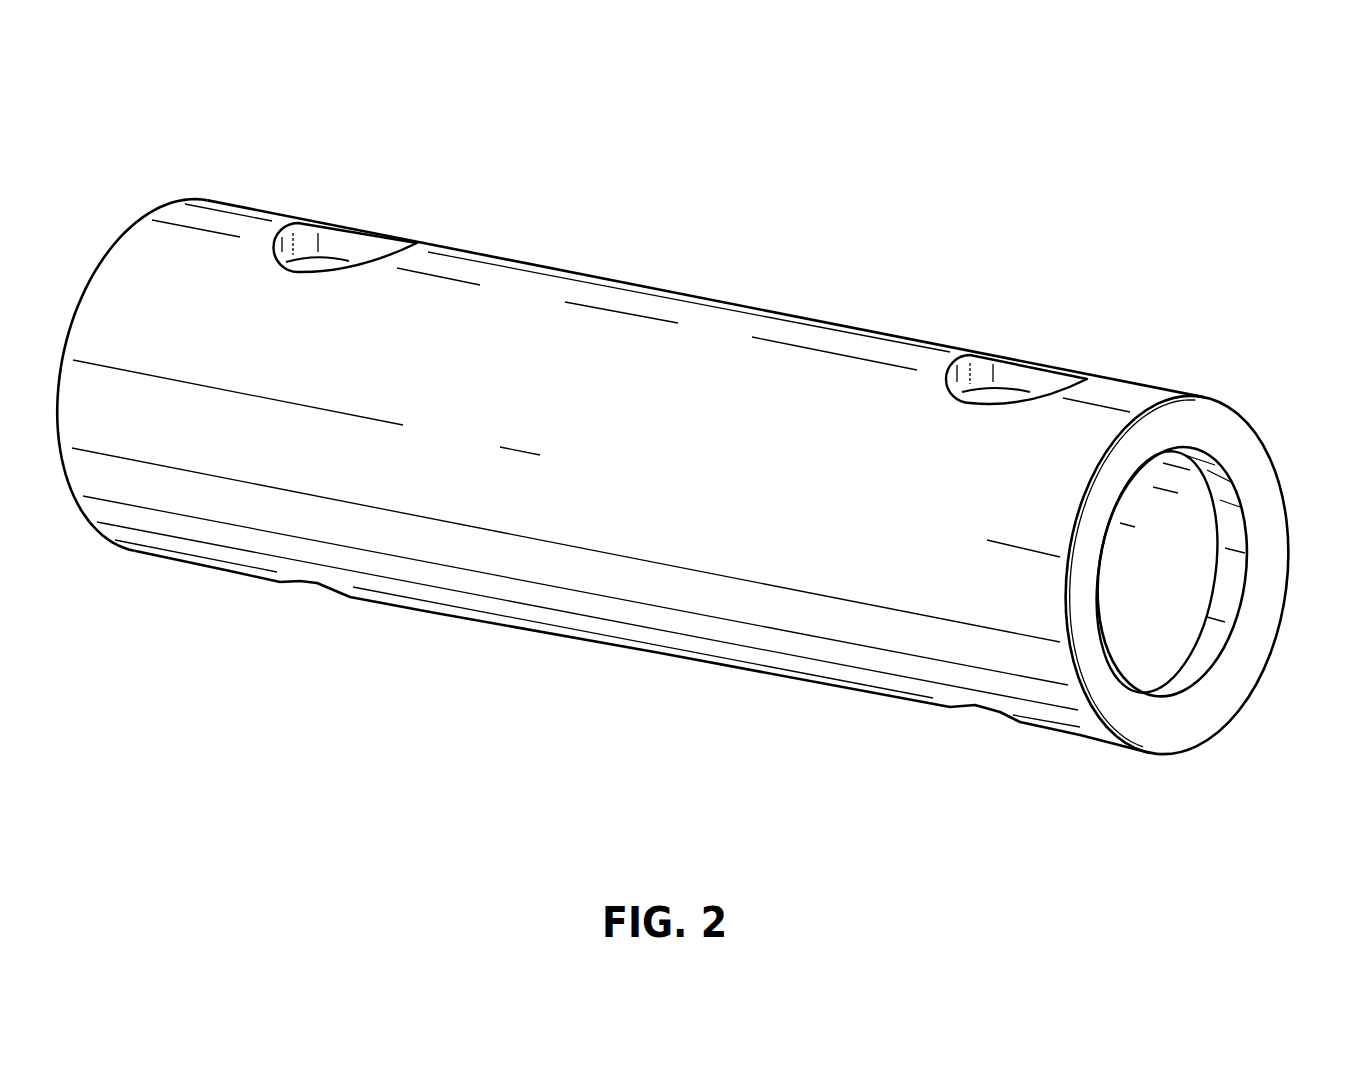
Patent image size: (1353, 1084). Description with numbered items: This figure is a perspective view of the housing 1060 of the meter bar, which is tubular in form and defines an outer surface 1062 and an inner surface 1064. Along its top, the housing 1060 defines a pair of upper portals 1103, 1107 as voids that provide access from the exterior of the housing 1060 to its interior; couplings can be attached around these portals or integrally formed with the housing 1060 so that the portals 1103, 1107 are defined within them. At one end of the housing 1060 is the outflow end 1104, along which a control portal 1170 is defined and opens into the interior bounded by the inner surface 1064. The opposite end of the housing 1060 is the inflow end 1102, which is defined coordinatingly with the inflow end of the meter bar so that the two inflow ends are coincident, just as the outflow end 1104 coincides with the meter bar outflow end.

The housing 1060 is at (822, 244).
The inflow end 1102 is at (247, 166).
The upper portal 1103 is at (350, 247).
The upper portal 1107 is at (1021, 382).
The outflow end 1104 is at (1213, 358).
The control portal 1170 is at (1247, 487).
The outer surface 1062 is at (957, 519).
The inner surface 1064 is at (1200, 567).